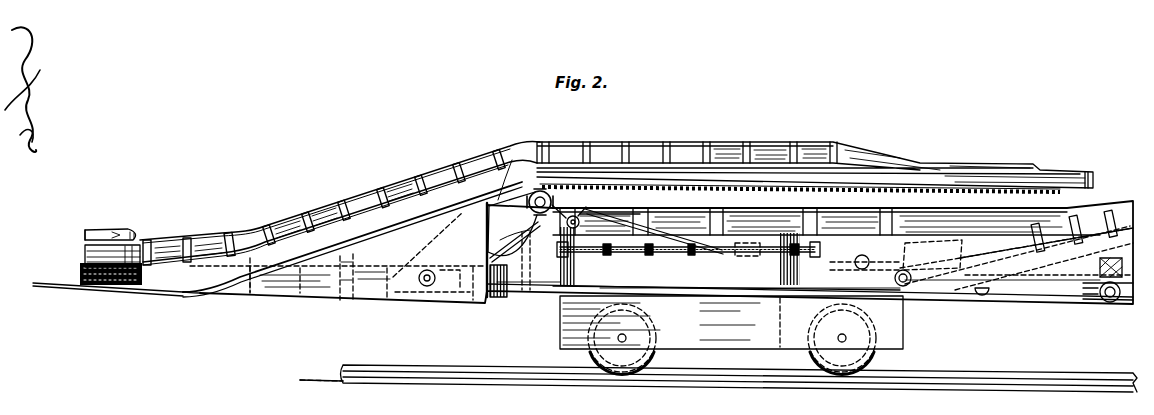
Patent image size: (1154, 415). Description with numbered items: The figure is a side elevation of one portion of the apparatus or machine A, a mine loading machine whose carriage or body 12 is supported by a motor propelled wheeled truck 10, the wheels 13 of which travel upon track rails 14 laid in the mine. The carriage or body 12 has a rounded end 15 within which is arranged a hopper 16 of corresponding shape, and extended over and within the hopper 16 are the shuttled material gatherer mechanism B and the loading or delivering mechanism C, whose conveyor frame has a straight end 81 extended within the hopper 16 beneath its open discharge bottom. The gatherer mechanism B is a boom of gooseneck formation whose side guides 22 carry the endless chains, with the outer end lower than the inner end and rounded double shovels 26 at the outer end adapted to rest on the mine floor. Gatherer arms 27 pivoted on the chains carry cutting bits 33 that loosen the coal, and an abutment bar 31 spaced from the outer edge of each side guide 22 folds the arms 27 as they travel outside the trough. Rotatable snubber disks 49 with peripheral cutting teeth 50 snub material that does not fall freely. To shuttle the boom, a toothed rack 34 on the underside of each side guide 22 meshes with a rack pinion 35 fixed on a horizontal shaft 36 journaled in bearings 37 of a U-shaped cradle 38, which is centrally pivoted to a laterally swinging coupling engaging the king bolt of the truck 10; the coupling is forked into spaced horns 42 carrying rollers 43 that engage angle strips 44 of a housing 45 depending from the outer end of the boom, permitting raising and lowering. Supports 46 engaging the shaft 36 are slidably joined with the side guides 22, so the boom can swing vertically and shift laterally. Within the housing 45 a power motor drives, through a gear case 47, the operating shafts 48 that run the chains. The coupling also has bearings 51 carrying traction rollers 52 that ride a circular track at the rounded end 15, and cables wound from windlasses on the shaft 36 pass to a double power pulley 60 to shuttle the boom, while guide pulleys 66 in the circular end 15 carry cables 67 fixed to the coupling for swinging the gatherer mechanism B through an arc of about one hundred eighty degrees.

The motor propelled wheeled truck 10 is at (799, 341).
The carriage or body 12 is at (1031, 276).
The wheels 13 is at (590, 357).
The track rails 14 is at (1000, 373).
The rounded end 15 is at (678, 237).
The hopper 16 is at (665, 212).
The side guides 22 is at (214, 297).
The rounded double shovels 26 is at (34, 283).
The gatherer arms 27 is at (109, 284).
The abutment bar 31 is at (884, 179).
The cutting bits 33 is at (80, 270).
The toothed rack 34 is at (800, 193).
The rack pinion 35 is at (560, 208).
The horizontal shaft 36 is at (538, 191).
The bearings 37 is at (530, 197).
The U-shaped cradle 38 is at (521, 207).
The spaced horns 42 is at (491, 296).
The rollers 43 is at (447, 300).
The angle strips 44 is at (492, 243).
The housing 45 is at (306, 300).
The supports 46 is at (406, 298).
The gear case 47 is at (372, 300).
The operating shafts 48 is at (251, 292).
The snubber disks 49 is at (113, 229).
The peripheral cutting teeth 50 is at (88, 234).
The bearings 51 is at (570, 230).
The traction rollers 52 is at (612, 206).
The double power pulley 60 is at (1094, 301).
The guide pulleys 66 is at (590, 253).
The cables 67 is at (668, 253).
The straight end 81 is at (908, 266).
The apparatus or machine A is at (545, 307).
The shuttled material gatherer mechanism B is at (374, 207).
The loading or delivering mechanism C is at (1131, 218).